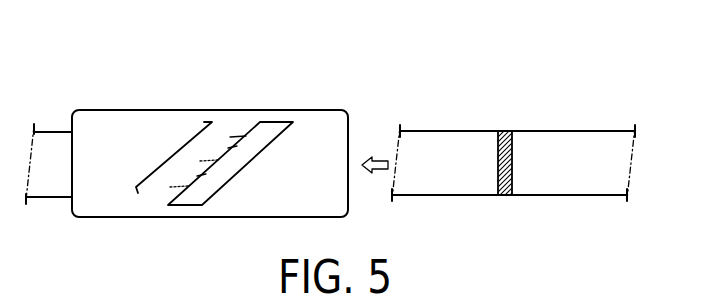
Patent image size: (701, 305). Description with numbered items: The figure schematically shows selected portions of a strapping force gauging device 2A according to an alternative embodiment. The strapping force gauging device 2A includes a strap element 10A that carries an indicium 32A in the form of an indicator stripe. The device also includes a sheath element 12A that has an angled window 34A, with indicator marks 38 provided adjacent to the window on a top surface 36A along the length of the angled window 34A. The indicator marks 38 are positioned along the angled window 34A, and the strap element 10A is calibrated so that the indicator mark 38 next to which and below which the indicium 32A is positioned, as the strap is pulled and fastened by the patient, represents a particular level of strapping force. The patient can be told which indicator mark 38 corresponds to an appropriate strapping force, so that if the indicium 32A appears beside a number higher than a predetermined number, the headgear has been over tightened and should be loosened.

The strapping force gauging device 2A is at (374, 92).
The sheath element 12A is at (113, 120).
The top surface 36A is at (318, 120).
The indicator marks 38 is at (175, 153).
The angled window 34A is at (251, 157).
The strap element 10A is at (440, 143).
The indicium 32A is at (508, 124).